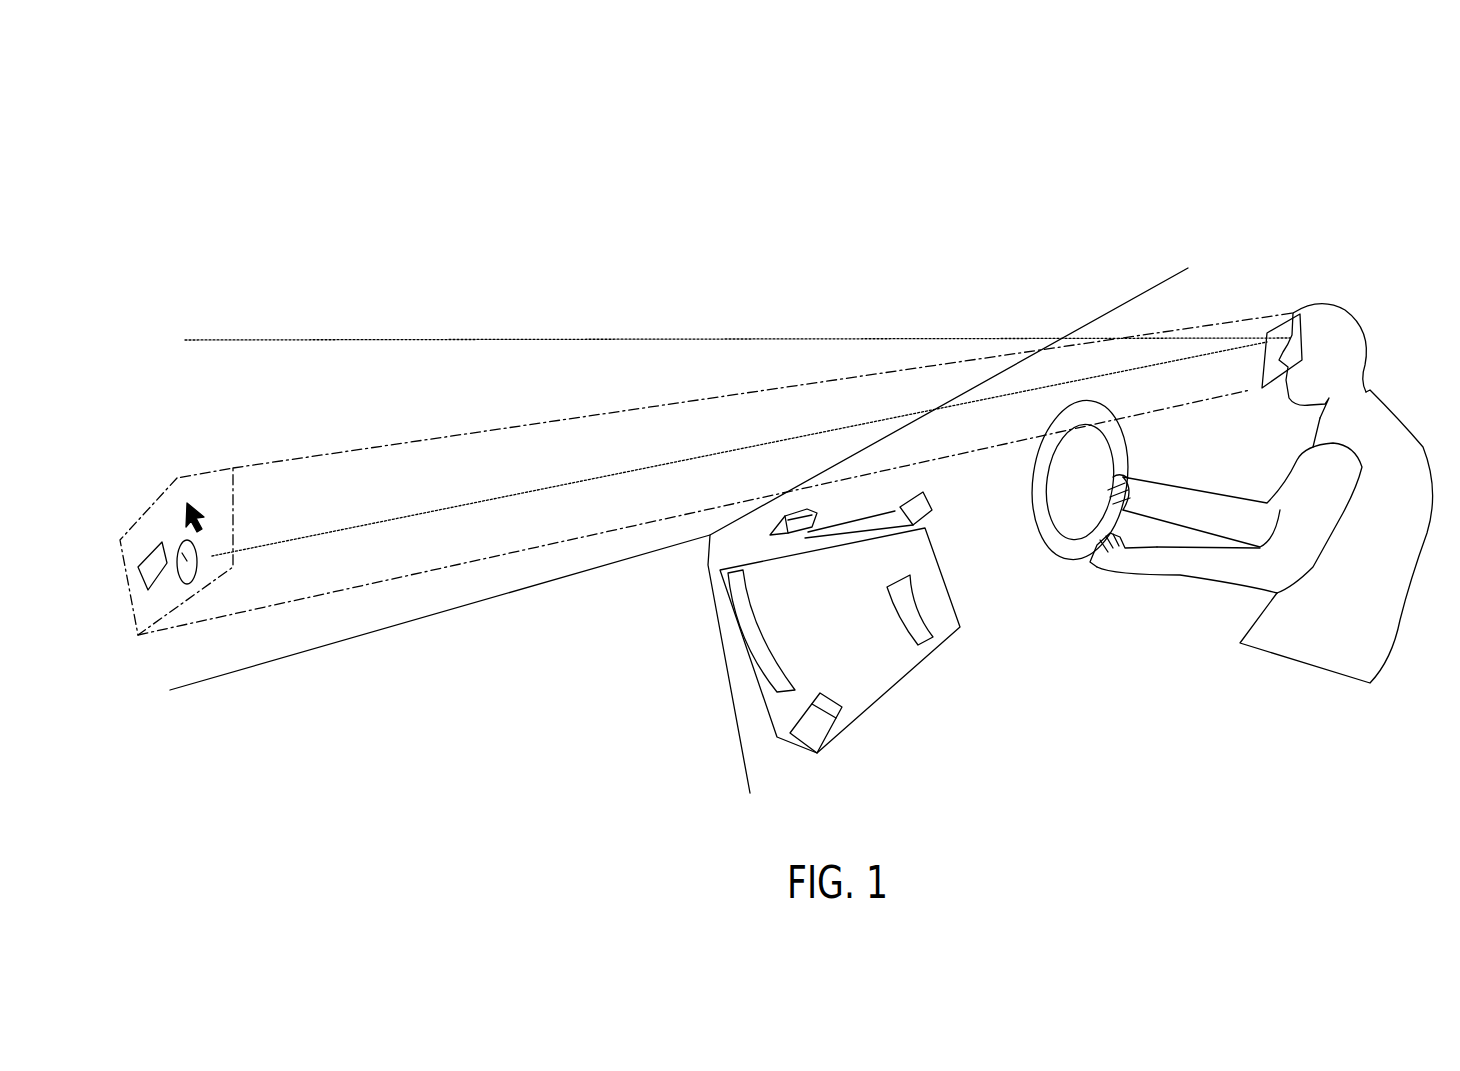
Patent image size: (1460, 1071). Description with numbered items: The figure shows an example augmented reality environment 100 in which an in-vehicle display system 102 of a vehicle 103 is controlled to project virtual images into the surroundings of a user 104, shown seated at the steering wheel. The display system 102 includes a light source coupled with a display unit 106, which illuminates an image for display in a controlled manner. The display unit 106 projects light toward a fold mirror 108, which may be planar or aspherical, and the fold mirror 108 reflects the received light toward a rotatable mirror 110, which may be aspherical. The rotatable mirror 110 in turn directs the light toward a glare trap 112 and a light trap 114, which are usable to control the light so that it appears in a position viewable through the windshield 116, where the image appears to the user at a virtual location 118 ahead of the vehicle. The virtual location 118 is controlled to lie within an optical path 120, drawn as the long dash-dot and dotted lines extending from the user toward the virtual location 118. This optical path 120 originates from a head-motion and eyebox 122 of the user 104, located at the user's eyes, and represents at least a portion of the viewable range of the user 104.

The augmented reality environment 100 is at (190, 52).
The in-vehicle display system 102 is at (832, 778).
The vehicle 103 is at (1345, 252).
The user 104 is at (1397, 430).
The display unit 106 is at (845, 730).
The fold mirror 108 is at (950, 640).
The rotatable mirror 110 is at (743, 645).
The glare trap 112 is at (907, 528).
The light trap 114 is at (783, 513).
The windshield 116 is at (1057, 333).
The virtual location 118 is at (155, 497).
The optical path 120 is at (348, 477).
The head-motion and eyebox 122 is at (1268, 317).